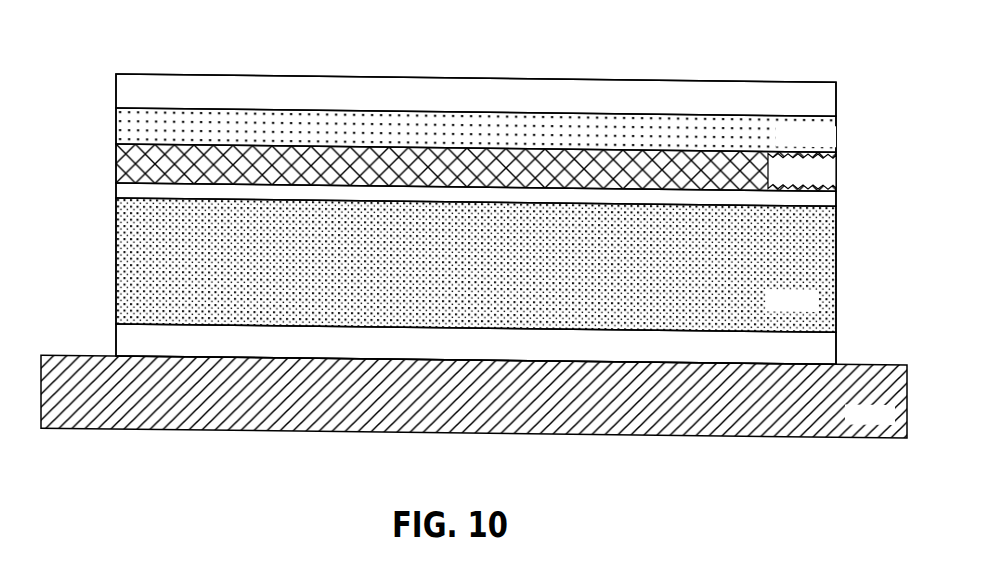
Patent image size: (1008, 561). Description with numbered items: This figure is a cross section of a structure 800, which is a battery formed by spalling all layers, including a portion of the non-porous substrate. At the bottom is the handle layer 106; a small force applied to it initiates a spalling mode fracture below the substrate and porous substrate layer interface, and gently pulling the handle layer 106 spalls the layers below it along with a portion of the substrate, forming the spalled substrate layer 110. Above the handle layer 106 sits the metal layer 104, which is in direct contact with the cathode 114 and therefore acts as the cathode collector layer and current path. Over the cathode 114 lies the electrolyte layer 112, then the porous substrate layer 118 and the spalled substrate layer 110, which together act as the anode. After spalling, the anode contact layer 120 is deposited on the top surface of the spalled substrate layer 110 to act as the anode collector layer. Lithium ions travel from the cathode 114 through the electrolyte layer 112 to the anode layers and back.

The structure 800 is at (153, 41).
The anode contact layer 120 is at (821, 103).
The spalled substrate layer 110 is at (821, 138).
The porous substrate layer 118 is at (821, 175).
The electrolyte layer 112 is at (133, 189).
The cathode 114 is at (811, 302).
The metal layer 104 is at (817, 353).
The handle layer 106 is at (889, 414).